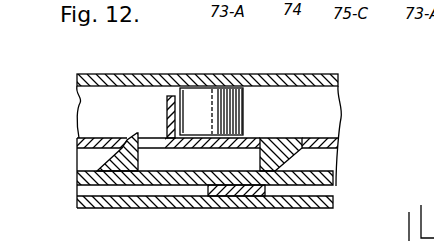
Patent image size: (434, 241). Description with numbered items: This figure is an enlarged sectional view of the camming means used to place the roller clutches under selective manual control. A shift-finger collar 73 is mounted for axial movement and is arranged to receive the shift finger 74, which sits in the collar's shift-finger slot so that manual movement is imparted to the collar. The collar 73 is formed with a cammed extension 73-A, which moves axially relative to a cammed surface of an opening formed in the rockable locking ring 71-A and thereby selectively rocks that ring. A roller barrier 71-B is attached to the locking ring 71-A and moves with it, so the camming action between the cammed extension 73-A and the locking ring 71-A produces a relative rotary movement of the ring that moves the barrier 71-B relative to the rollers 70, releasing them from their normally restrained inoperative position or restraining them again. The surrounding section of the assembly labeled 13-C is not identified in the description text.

The roller clutch 70 is at (206, 100).
The housing section 13-C is at (80, 104).
The restraining barrier 71-B is at (166, 103).
The locking ring 71-A is at (338, 146).
The cammed extension 73-A is at (130, 160).
The shift-finger collar 73 is at (323, 206).
The shift finger 74 is at (238, 207).